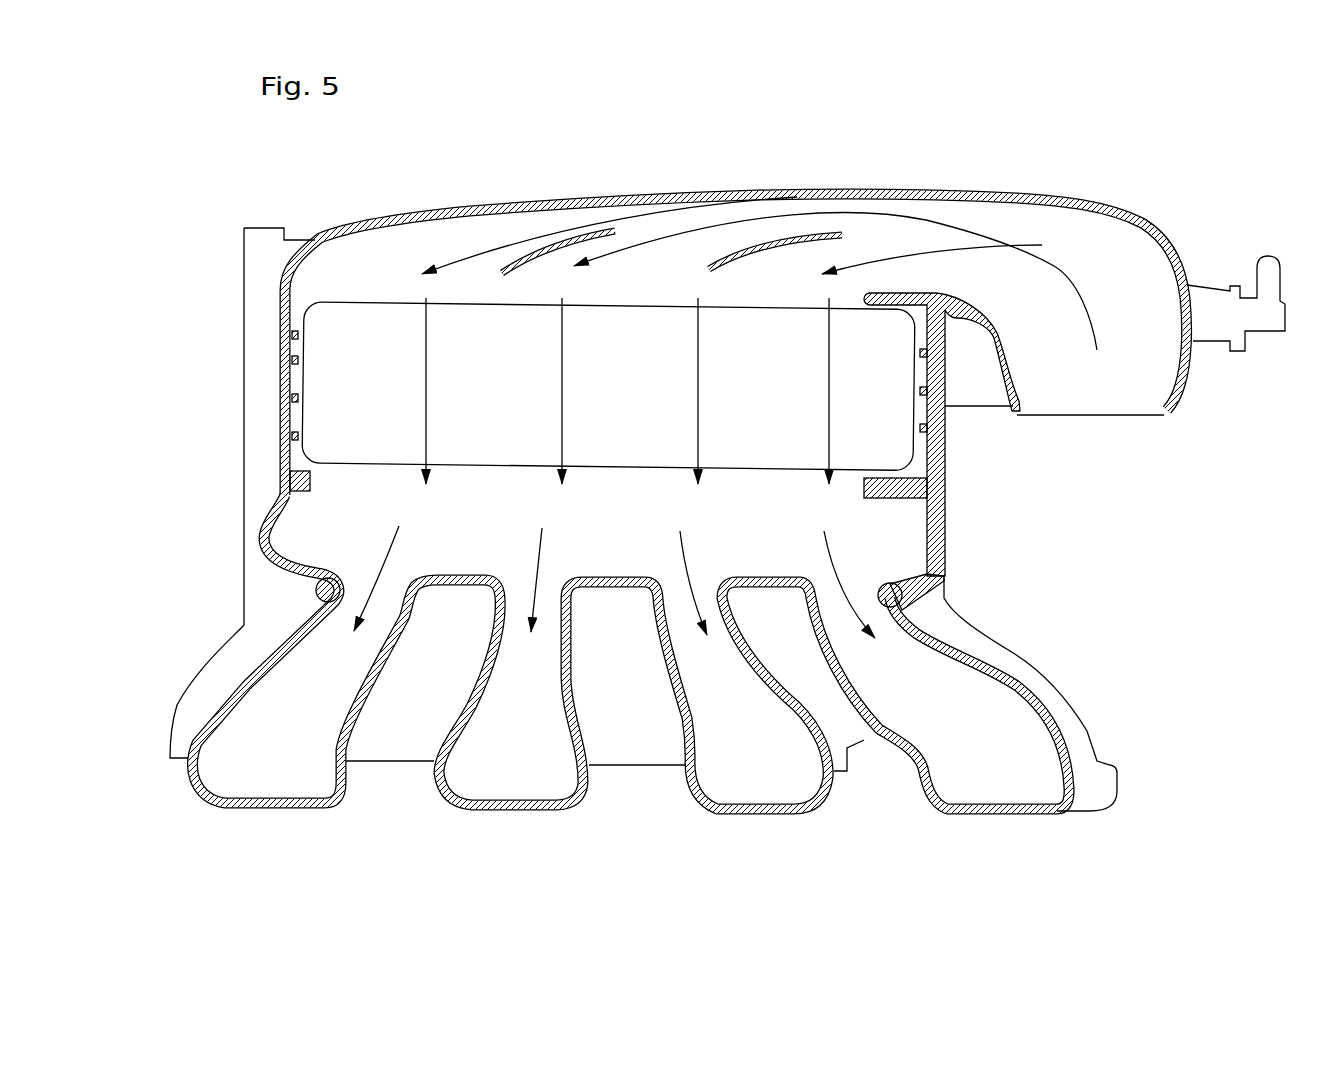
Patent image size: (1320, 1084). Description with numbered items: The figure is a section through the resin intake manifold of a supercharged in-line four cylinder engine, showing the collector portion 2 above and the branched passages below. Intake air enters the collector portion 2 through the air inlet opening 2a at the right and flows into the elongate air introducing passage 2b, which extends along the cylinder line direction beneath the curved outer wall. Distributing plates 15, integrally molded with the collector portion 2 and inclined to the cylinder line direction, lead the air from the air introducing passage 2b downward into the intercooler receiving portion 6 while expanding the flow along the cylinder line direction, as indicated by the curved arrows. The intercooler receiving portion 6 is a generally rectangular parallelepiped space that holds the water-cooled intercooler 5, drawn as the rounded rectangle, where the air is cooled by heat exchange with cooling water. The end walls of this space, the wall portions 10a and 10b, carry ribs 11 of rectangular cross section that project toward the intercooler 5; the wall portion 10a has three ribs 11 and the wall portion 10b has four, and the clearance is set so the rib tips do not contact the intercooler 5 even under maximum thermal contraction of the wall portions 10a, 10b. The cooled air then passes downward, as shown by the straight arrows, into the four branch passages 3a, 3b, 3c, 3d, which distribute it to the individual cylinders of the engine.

The collector portion 2 is at (1000, 190).
The air inlet opening 2a is at (1100, 420).
The air introducing passage 2b is at (445, 248).
The branch passage 3a is at (260, 767).
The branch passage 3b is at (500, 767).
The branch passage 3c is at (747, 773).
The branch passage 3d is at (987, 770).
The intercooler 5 is at (318, 415).
The intercooler receiving portion 6 is at (300, 461).
The wall portion 10a is at (950, 378).
The wall portion 10b is at (282, 298).
The ribs 11 is at (301, 337).
The distributing plates 15 is at (565, 246).